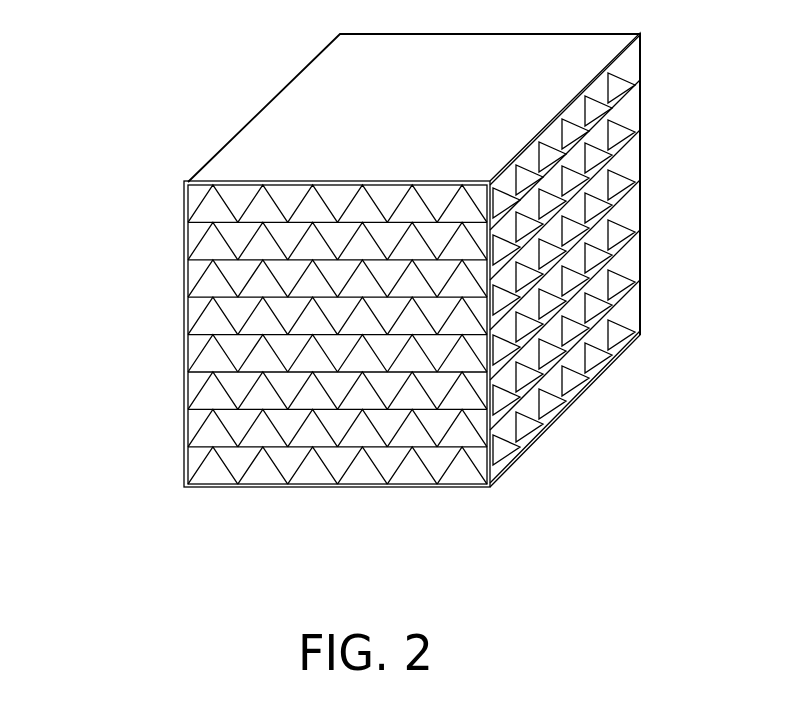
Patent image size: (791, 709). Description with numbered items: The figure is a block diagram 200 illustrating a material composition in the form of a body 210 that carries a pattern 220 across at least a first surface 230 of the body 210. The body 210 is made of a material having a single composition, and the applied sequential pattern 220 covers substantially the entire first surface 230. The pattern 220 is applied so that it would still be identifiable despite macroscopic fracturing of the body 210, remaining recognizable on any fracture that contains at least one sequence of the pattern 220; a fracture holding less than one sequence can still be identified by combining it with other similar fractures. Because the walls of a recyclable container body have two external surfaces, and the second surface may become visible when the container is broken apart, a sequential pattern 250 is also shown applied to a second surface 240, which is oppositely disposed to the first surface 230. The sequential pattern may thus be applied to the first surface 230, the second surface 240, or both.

The block diagram 200 is at (122, 537).
The body 210 is at (185, 182).
The pattern 220 is at (188, 240).
The first surface 230 is at (185, 333).
The second surface 240 is at (534, 441).
The sequential pattern 250 is at (628, 188).